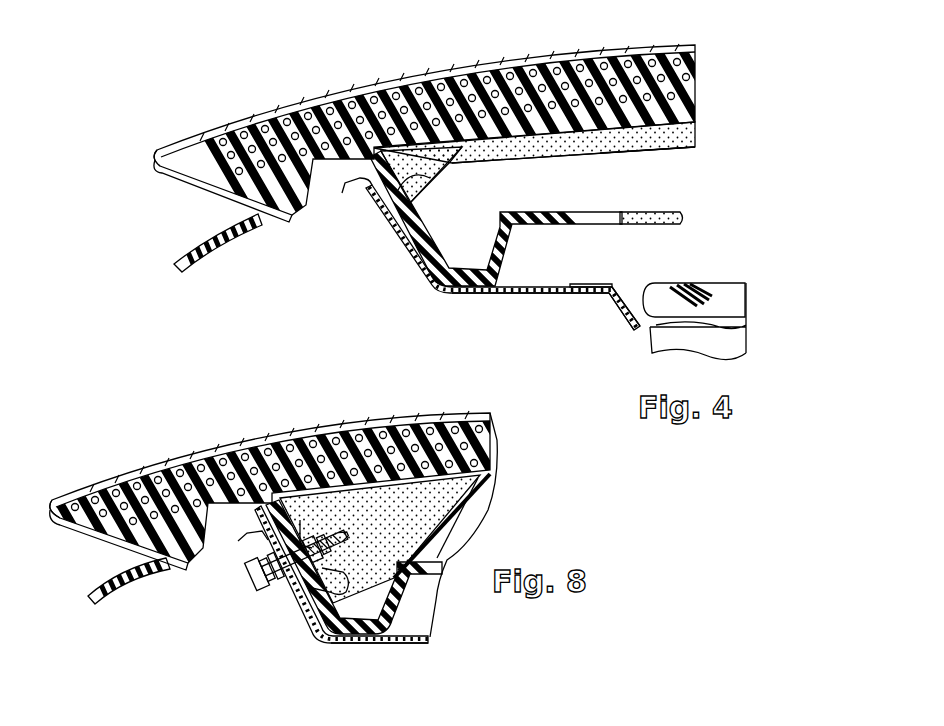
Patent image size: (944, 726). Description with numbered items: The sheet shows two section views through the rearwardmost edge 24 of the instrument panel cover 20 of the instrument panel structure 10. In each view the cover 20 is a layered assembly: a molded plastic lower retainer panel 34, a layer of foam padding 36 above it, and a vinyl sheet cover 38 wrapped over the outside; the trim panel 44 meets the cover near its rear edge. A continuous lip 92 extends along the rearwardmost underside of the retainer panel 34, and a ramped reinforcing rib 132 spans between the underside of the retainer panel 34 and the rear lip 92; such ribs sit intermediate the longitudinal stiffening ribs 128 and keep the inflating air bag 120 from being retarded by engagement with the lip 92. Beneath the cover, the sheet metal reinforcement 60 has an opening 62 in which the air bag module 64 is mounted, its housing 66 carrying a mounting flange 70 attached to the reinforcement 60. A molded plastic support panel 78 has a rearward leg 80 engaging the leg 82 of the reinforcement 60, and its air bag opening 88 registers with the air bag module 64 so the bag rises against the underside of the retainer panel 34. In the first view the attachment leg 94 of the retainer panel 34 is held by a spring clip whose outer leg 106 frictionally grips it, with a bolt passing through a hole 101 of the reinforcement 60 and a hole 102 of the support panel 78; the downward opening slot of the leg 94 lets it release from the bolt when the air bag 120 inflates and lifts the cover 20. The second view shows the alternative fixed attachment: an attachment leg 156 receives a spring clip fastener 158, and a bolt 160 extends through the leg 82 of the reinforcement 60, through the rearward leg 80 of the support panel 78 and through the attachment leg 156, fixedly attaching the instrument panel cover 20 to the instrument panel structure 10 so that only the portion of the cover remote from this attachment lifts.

In FIG. 4, the instrument panel structure 10 is at (201, 82).
In FIG. 8, the instrument panel structure 10 is at (96, 430).
In FIG. 4, the instrument panel cover assembly 20 is at (478, 121).
In FIG. 8, the instrument panel cover assembly 20 is at (289, 460).
In FIG. 4, the rearwardmost edge 24 is at (156, 152).
In FIG. 8, the rearwardmost edge 24 is at (55, 500).
In FIG. 4, the molded plastic lower retainer panel 34 is at (660, 128).
In FIG. 4, the layer of foam padding 36 is at (353, 100).
In FIG. 8, the layer of foam padding 36 is at (225, 445).
In FIG. 4, the vinyl sheet cover 38 is at (244, 116).
In FIG. 8, the vinyl sheet cover 38 is at (133, 468).
In FIG. 4, the trim panel 44 is at (228, 228).
In FIG. 8, the trim panel 44 is at (122, 575).
In FIG. 4, the sheet metal reinforcement 60 is at (536, 302).
In FIG. 8, the sheet metal reinforcement 60 is at (402, 652).
In FIG. 4, the opening 62 is at (613, 297).
In FIG. 4, the air bag module 64 is at (645, 345).
In FIG. 4, the housing 66 is at (733, 345).
In FIG. 4, the mounting flange 70 is at (598, 283).
In FIG. 4, the molded plastic support panel 78 is at (526, 238).
In FIG. 8, the molded plastic support panel 78 is at (435, 592).
In FIG. 8, the rearward leg 80 is at (275, 532).
In FIG. 4, the leg 82 is at (388, 232).
In FIG. 8, the leg 82 is at (313, 620).
In FIG. 4, the air bag opening 88 is at (627, 222).
In FIG. 4, the continuous lip 92 is at (410, 195).
In FIG. 8, the attachment leg 94 is at (450, 468).
In FIG. 8, the hole 101 is at (257, 571).
In FIG. 8, the hole 102 is at (288, 577).
In FIG. 8, the outer leg 106 is at (316, 520).
In FIG. 4, the air bag 120 is at (735, 303).
In FIG. 4, the stiffening ribs 128 is at (660, 147).
In FIG. 4, the ramped reinforcing ribs 132 is at (430, 160).
In FIG. 8, the ramped reinforcing ribs 132 is at (380, 539).
In FIG. 8, the attachment leg 156 is at (293, 525).
In FIG. 8, the spring clip fastener 158 is at (305, 520).
In FIG. 8, the bolt 160 is at (258, 567).